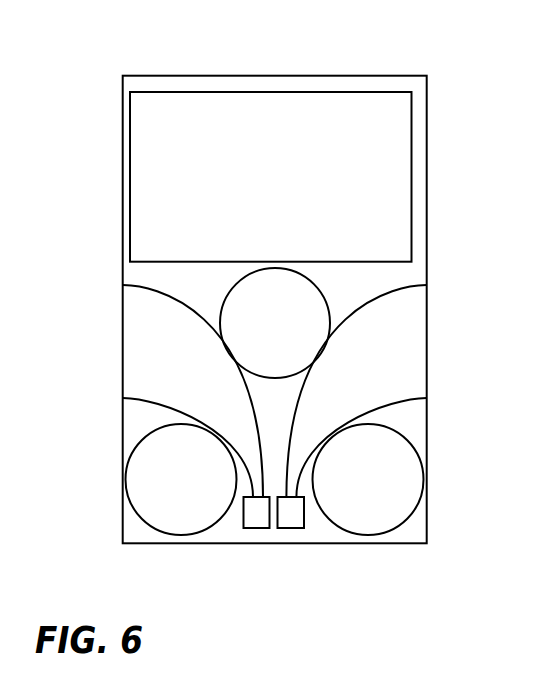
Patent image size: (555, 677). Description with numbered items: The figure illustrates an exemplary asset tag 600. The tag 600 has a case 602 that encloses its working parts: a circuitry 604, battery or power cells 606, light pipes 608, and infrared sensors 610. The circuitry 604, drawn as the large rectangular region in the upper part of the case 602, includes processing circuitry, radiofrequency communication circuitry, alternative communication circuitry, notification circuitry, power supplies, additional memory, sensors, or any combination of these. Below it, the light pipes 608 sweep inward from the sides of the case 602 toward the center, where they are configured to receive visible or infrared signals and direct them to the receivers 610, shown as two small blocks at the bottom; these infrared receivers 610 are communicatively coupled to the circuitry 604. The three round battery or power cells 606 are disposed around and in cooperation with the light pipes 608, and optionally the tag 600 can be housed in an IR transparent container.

The tag 600 is at (146, 48).
The case 602 is at (427, 98).
The circuitry 604 is at (387, 185).
The battery or power cells 606 is at (247, 305).
The light pipe 608 is at (153, 372).
The infrared sensors 610 is at (256, 528).